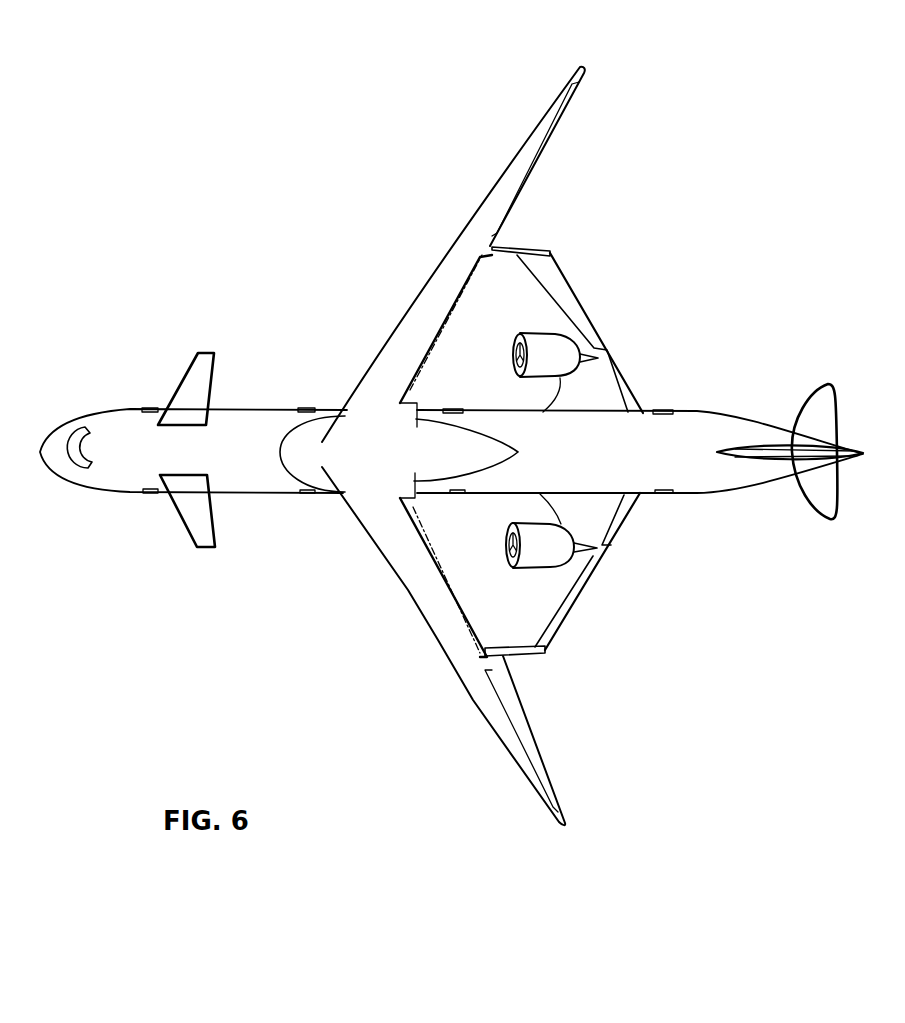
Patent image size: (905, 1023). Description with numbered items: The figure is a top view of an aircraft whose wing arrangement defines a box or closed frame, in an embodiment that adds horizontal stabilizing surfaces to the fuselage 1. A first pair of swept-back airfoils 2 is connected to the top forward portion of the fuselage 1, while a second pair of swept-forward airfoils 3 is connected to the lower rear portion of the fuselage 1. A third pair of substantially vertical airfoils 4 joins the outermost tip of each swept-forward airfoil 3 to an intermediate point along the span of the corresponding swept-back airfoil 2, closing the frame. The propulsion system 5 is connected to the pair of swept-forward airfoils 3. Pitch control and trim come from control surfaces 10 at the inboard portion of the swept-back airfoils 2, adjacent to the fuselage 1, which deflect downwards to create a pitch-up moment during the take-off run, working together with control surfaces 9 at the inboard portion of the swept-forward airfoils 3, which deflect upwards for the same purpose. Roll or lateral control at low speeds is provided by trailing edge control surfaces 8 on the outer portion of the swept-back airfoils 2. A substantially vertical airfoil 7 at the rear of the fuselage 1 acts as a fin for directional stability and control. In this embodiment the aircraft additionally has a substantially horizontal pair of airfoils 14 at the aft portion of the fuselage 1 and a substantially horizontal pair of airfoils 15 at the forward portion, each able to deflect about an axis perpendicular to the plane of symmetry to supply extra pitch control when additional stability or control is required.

The fuselage 1 is at (127, 420).
The swept-back airfoils 2 is at (398, 543).
The swept-forward airfoils 3 is at (597, 505).
The substantially vertical airfoils 4 is at (530, 243).
The propulsion system 5 is at (553, 365).
The substantially vertical airfoil 7 is at (780, 352).
The trailing edge control surfaces 8 is at (527, 173).
The control surfaces 9 is at (620, 505).
The control surfaces 10 is at (442, 583).
The substantially horizontal pair of airfoils 14 is at (823, 495).
The substantially horizontal pair of airfoils 15 is at (183, 503).